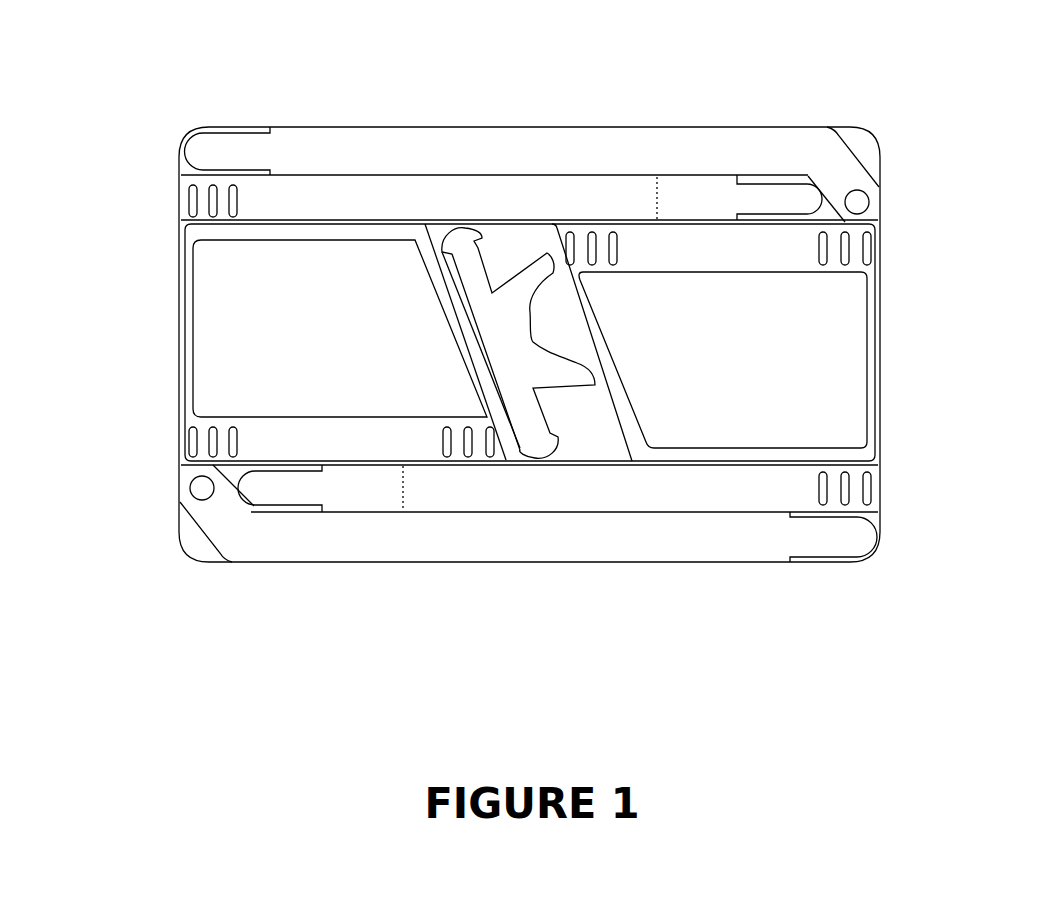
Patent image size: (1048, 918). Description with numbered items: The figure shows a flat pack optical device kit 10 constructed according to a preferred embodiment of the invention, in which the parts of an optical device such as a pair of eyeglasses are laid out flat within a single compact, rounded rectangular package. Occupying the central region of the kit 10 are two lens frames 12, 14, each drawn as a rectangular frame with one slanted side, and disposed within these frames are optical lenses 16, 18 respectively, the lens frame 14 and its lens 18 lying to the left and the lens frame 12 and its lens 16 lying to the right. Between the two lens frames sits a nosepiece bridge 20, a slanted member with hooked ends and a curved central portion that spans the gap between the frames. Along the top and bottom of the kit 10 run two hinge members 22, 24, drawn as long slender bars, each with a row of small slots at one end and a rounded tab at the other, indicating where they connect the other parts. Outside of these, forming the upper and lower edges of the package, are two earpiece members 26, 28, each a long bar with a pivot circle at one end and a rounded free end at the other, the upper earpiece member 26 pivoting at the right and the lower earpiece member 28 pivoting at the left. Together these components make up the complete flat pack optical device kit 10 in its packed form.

The flat pack optical device kit 10 is at (297, 83).
The lens frame 12 is at (878, 311).
The lens frame 14 is at (176, 351).
The optical lens 16 is at (797, 350).
The optical lens 18 is at (254, 297).
The nosepiece bridge 20 is at (532, 424).
The hinge member 22 is at (443, 197).
The hinge member 24 is at (622, 492).
The earpiece member 26 is at (738, 147).
The earpiece member 28 is at (303, 542).